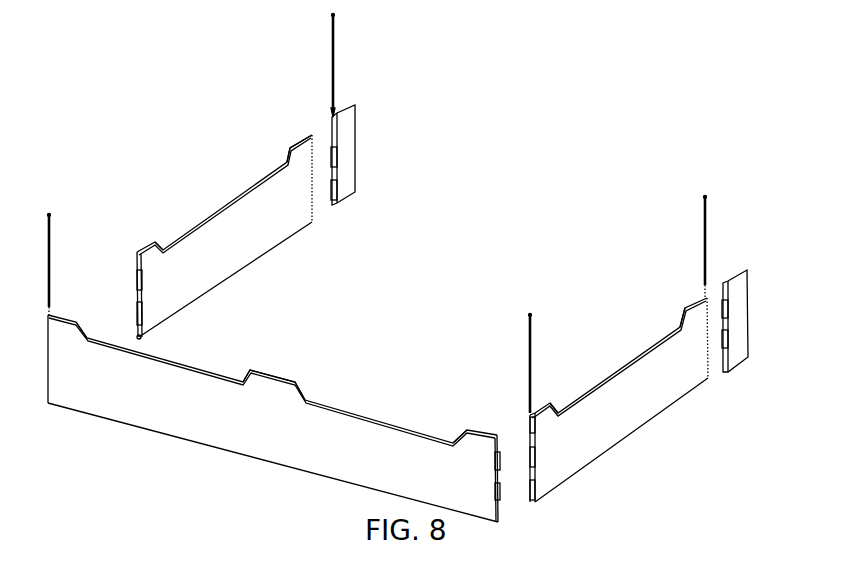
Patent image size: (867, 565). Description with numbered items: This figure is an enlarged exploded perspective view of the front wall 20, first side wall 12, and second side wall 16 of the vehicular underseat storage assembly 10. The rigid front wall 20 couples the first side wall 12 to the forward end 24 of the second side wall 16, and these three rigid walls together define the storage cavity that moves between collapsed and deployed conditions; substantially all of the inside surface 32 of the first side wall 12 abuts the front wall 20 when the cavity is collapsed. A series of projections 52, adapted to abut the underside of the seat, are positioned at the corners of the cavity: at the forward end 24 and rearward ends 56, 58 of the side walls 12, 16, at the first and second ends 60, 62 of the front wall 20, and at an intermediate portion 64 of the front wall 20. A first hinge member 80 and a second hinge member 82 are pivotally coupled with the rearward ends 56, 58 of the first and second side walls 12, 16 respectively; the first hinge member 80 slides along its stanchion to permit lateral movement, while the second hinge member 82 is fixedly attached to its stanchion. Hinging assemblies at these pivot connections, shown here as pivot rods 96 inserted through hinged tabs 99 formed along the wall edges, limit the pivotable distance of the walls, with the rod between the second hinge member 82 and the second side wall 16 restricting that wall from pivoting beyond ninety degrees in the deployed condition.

The vehicular underseat storage assembly 10 is at (185, 118).
The first side wall 12 is at (224, 251).
The second side wall 16 is at (617, 411).
The front wall 20 is at (147, 401).
The forward end of the second side wall 24 is at (550, 468).
The inside surface of the first side wall 32 is at (257, 233).
The projections 52 is at (302, 152).
The rearward end of the first side wall 56 is at (307, 187).
The rearward end of the second side wall 58 is at (695, 370).
The first end of the front wall 60 is at (63, 367).
The second end of the front wall 62 is at (470, 497).
The intermediate portion of the front wall 64 is at (268, 420).
The first hinge member 80 is at (345, 137).
The second hinge member 82 is at (742, 285).
The pivot rod 96 is at (336, 55).
The hinge knuckle 99 is at (332, 128).